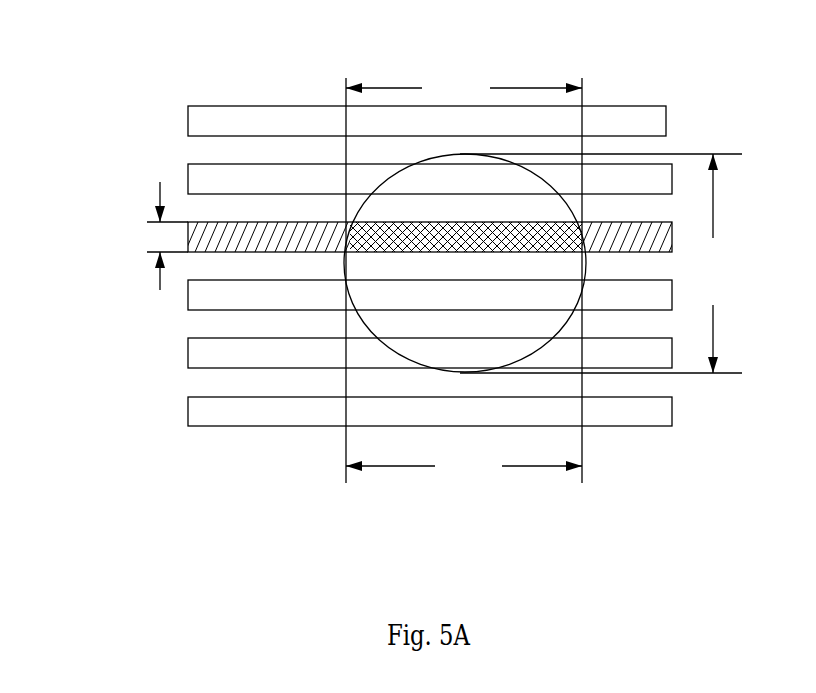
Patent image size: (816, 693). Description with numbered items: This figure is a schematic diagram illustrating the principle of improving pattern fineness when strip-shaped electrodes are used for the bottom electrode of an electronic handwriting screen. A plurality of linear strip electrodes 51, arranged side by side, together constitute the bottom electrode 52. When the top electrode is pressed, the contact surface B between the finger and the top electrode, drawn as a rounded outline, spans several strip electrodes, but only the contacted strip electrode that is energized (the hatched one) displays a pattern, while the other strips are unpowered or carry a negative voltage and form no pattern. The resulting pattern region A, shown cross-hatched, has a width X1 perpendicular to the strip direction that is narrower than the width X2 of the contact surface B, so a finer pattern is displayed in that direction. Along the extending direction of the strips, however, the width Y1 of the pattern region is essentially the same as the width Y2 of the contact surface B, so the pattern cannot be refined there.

The strip electrode 51 is at (463, 82).
The bottom electrode 52 is at (140, 116).
The pattern region A is at (384, 364).
The contact surface B is at (428, 143).
The width of the pattern region X1 is at (155, 236).
The width of the contact surface X2 is at (601, 263).
The width of the pattern region in the extending direction Y1 is at (464, 90).
The width of the contact surface in the extending direction Y2 is at (464, 470).